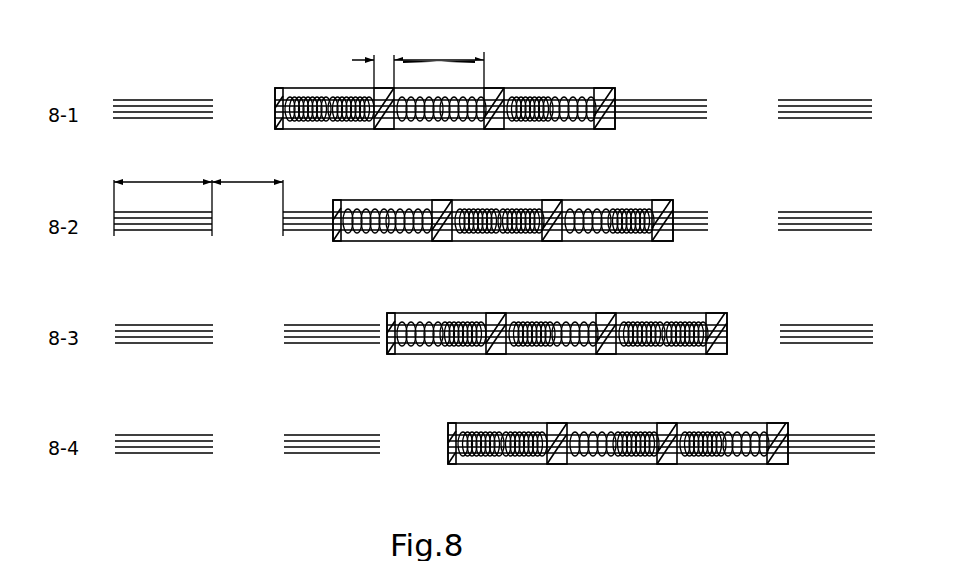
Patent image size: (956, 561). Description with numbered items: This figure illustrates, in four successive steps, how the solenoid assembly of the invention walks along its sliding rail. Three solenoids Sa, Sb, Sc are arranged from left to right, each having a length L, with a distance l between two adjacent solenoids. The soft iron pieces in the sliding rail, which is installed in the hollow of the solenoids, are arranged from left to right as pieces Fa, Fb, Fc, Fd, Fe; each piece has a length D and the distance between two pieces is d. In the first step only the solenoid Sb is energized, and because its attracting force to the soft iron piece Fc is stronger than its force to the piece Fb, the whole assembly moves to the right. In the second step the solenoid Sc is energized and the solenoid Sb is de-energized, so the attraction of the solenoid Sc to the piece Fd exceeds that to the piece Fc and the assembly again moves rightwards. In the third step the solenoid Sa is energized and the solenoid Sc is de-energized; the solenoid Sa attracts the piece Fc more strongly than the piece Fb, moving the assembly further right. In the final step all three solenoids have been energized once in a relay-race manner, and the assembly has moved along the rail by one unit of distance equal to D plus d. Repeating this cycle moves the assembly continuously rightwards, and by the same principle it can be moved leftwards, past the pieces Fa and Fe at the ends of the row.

The soft iron piece Fa is at (163, 259).
The soft iron piece Fb is at (391, 259).
The soft iron piece Fc is at (505, 259).
The soft iron piece Fd is at (615, 259).
The soft iron piece Fe is at (776, 259).
The solenoid Sa is at (416, 291).
The solenoid Sb is at (528, 291).
The solenoid Sc is at (638, 291).
The length of soft iron piece D is at (163, 198).
The distance between two soft iron pieces d is at (247, 198).
The distance between two adjacent solenoids l is at (373, 64).
The length of solenoid L is at (439, 63).